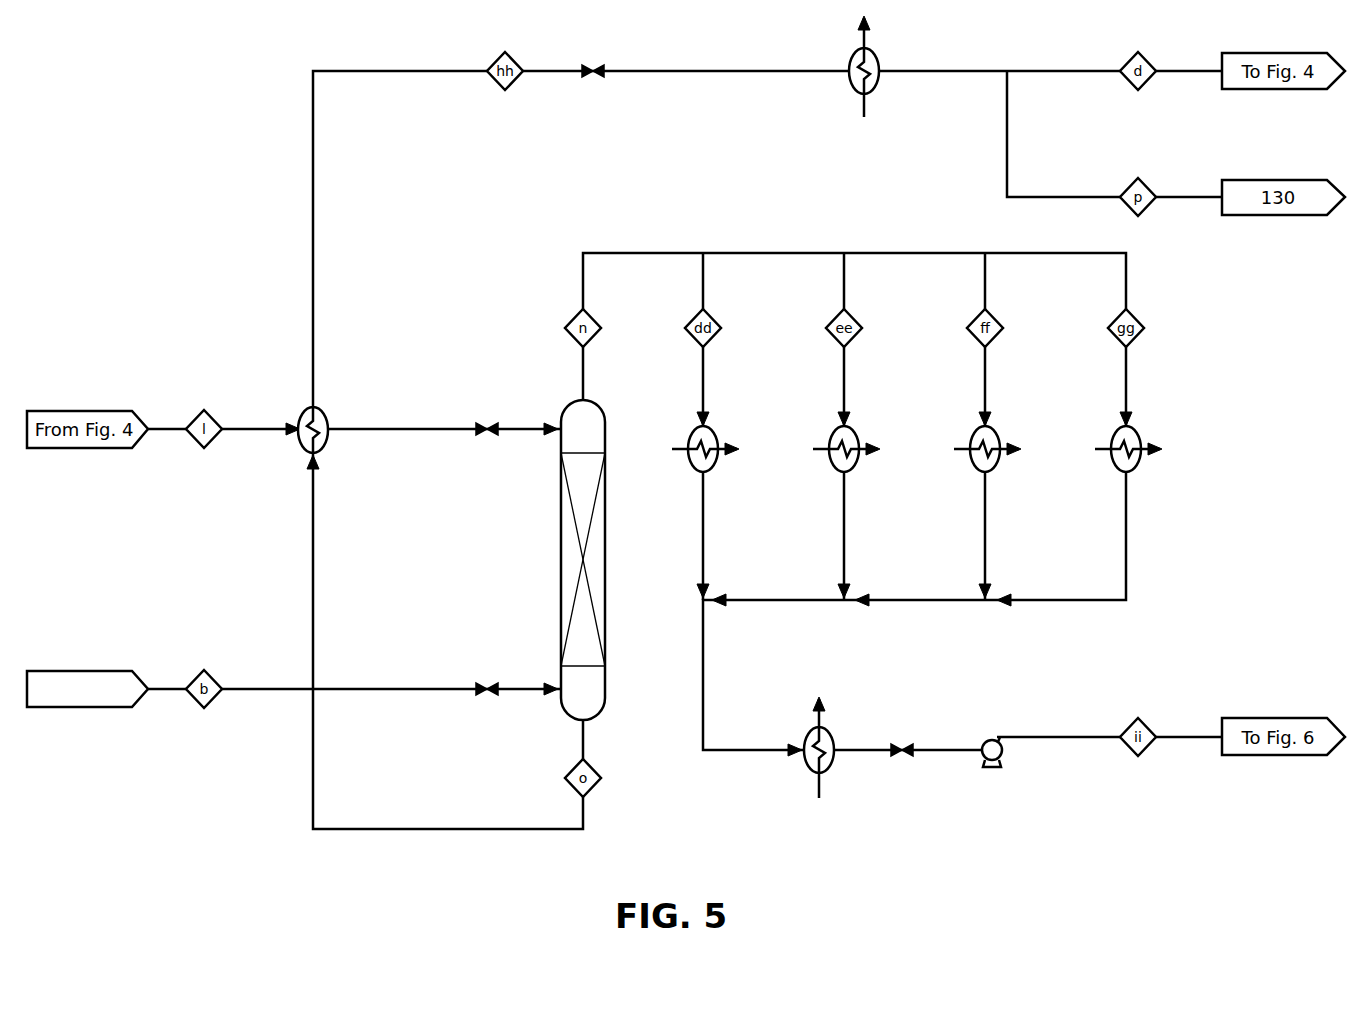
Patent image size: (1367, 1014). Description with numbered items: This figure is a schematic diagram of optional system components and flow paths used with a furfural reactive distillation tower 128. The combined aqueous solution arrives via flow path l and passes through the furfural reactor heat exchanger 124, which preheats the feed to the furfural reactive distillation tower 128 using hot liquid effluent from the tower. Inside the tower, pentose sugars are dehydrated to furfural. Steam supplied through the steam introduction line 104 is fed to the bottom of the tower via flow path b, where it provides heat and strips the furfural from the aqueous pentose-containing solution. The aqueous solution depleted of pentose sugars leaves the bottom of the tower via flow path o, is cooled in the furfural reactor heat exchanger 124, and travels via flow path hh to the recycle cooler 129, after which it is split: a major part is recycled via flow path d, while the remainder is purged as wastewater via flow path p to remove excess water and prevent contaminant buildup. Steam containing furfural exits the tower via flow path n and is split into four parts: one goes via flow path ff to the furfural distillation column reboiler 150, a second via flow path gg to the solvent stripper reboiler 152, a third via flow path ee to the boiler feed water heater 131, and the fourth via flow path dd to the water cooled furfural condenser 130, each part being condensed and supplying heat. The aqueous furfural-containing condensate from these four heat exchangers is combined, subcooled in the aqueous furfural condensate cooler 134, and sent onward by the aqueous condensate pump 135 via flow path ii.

The steam introduction line 104 is at (87, 689).
The furfural reactor heat exchanger 124 is at (302, 409).
The furfural reactive distillation tower 128 is at (560, 575).
The recycle cooler 129 is at (878, 58).
The water cooled furfural condenser 130 is at (716, 468).
The boiler feed water heater 131 is at (857, 468).
The furfural distillation column reboiler 150 is at (998, 468).
The solvent stripper reboiler 152 is at (1139, 468).
The aqueous furfural condensate cooler 134 is at (833, 732).
The aqueous condensate pump 135 is at (989, 768).